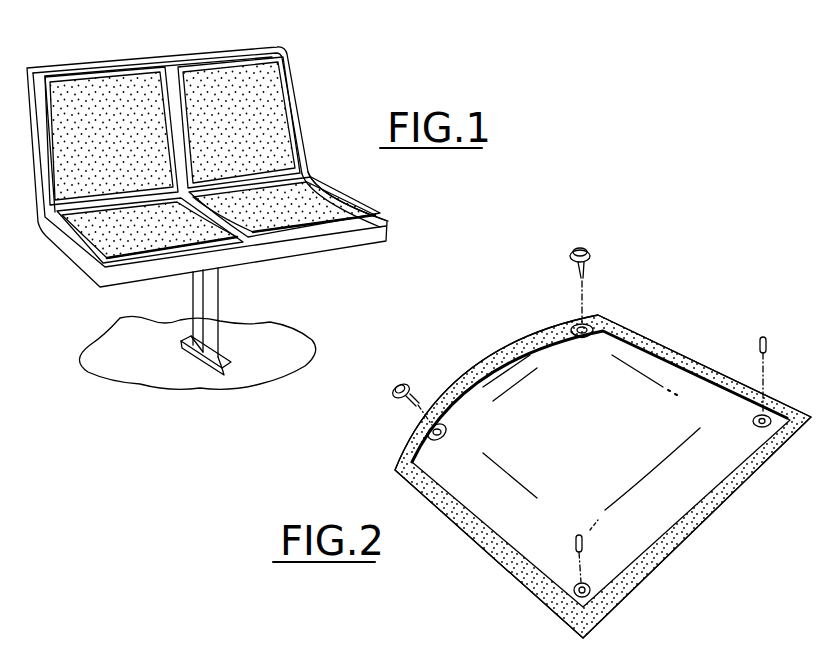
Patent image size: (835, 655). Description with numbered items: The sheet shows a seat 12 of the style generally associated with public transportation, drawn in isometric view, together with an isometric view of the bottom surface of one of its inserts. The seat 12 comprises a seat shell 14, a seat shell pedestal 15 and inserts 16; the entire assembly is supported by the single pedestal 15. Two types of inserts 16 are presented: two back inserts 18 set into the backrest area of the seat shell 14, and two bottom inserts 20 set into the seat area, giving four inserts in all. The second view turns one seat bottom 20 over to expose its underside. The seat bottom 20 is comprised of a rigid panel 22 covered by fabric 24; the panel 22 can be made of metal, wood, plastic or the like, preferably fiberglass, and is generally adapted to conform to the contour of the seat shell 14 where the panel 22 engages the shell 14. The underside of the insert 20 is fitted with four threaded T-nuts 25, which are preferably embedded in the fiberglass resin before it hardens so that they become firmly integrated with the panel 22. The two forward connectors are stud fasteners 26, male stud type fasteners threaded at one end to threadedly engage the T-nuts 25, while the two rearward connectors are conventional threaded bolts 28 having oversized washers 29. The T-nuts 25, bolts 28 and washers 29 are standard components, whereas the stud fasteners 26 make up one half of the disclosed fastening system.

In FIG. 1, the seat 12 is at (337, 65).
In FIG. 1, the seat shell 14 is at (312, 177).
In FIG. 1, the seat shell pedestal 15 is at (217, 307).
In FIG. 1, the inserts 16 is at (143, 82).
In FIG. 1, the back inserts 18 is at (88, 88).
In FIG. 1, the bottom inserts 20 is at (167, 237).
In FIG. 2, the bottom inserts 20 is at (680, 336).
In FIG. 2, the rigid panel 22 is at (517, 388).
In FIG. 2, the fabric 24 is at (510, 568).
In FIG. 2, the T-nuts 25 is at (594, 320).
In FIG. 2, the stud fasteners 26 is at (767, 345).
In FIG. 2, the bolts 28 is at (578, 272).
In FIG. 2, the oversized washers 29 is at (590, 258).